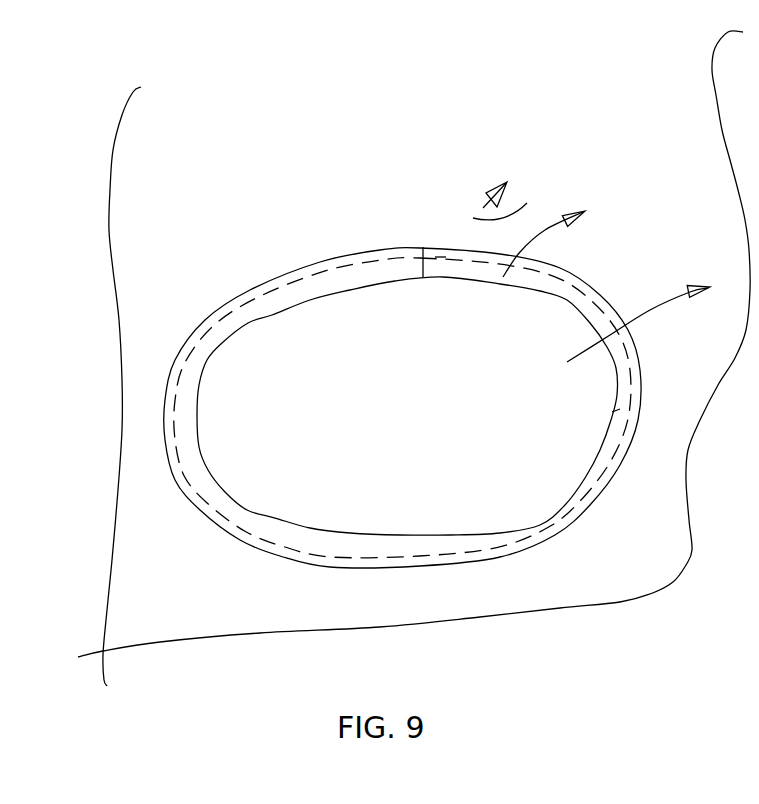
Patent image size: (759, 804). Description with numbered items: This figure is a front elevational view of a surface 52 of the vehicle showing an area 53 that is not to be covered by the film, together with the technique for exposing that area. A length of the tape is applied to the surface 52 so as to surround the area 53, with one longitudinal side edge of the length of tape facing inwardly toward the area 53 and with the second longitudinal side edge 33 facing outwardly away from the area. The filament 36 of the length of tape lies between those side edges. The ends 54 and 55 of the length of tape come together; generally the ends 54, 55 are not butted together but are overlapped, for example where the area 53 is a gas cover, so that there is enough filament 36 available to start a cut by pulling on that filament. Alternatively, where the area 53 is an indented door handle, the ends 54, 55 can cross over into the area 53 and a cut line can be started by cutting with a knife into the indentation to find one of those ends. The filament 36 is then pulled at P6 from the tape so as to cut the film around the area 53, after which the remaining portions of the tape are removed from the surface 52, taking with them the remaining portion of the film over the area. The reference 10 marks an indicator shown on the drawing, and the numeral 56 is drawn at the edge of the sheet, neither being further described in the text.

The seal member 10 is at (397, 217).
The second longitudinal side edge 33 is at (495, 560).
The filament 36 is at (552, 537).
The surface 52 is at (663, 230).
The area 53 is at (452, 440).
The end 54 is at (418, 266).
The end 55 is at (440, 257).
The pull direction P6 is at (591, 270).
The panel edge 56 is at (618, 410).